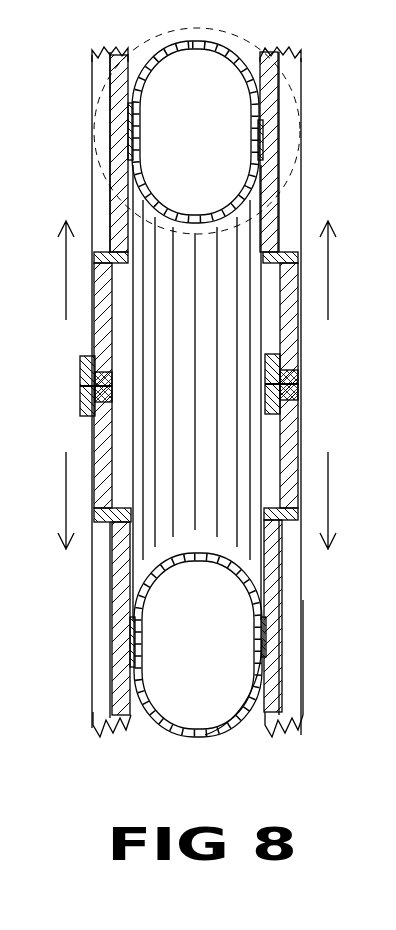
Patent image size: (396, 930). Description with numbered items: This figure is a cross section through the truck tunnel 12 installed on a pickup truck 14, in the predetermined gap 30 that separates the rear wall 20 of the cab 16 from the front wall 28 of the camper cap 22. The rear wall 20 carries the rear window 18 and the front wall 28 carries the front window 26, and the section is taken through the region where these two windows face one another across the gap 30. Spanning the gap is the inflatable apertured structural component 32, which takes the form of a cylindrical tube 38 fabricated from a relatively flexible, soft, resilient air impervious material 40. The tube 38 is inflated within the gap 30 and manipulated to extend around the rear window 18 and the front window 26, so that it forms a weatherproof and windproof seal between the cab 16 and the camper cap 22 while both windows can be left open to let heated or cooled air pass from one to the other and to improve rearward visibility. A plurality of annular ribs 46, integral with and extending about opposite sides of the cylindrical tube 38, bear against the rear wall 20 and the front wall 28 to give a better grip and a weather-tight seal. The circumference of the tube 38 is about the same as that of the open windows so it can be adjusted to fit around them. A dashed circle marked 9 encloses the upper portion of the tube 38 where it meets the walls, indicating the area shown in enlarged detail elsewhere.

The detail section circle 9 is at (98, 118).
The truck tunnel 12 is at (175, 741).
The pickup truck 14 is at (308, 623).
The cab 16 is at (301, 70).
The rear window 18 is at (288, 418).
The rear wall 20 is at (280, 653).
The camper cap 22 is at (93, 659).
The front window 26 is at (97, 333).
The front wall 28 is at (122, 704).
The predetermined gap 30 is at (255, 722).
The inflatable apertured structural component 32 is at (205, 738).
The cylindrical tube 38 is at (155, 435).
The air impervious material 40 is at (152, 57).
The annular ribs 46 is at (263, 152).